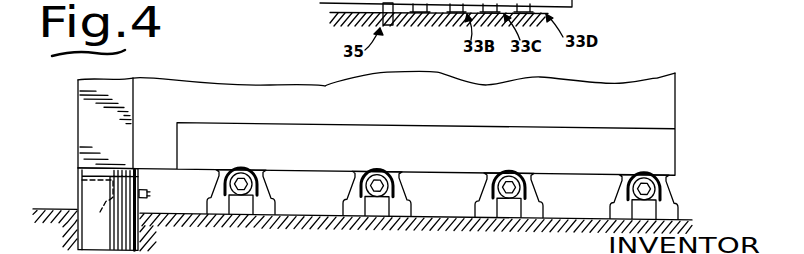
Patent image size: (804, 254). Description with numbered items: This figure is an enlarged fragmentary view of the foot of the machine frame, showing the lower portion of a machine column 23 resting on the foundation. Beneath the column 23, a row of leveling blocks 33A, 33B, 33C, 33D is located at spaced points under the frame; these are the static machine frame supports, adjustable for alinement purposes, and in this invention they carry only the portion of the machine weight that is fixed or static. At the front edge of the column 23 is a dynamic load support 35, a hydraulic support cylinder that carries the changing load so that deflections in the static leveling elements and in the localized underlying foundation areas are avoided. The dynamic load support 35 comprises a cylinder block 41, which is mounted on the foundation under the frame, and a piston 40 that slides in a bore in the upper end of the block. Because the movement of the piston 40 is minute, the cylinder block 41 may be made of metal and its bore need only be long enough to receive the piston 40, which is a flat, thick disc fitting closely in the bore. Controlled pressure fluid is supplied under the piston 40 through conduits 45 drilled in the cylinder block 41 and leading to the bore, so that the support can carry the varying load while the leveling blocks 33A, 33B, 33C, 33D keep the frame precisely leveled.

The machine column 23 is at (663, 92).
The leveling block 33A is at (278, 180).
The leveling block 33B is at (414, 180).
The leveling block 33C is at (548, 183).
The leveling block 33D is at (678, 188).
The dynamic load support 35 is at (150, 205).
The piston 40 is at (78, 169).
The cylinder block 41 is at (78, 199).
The conduit 45 is at (97, 206).